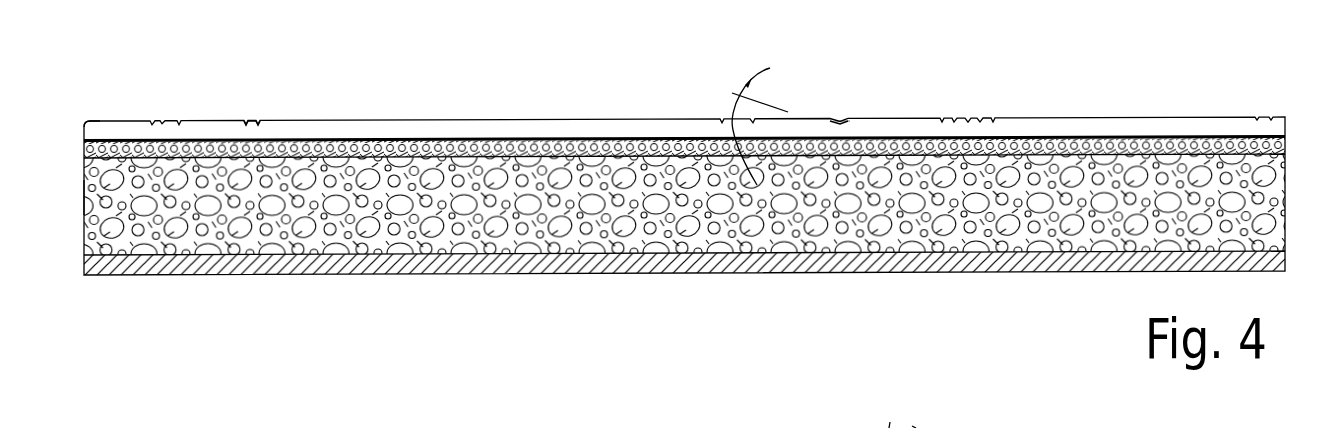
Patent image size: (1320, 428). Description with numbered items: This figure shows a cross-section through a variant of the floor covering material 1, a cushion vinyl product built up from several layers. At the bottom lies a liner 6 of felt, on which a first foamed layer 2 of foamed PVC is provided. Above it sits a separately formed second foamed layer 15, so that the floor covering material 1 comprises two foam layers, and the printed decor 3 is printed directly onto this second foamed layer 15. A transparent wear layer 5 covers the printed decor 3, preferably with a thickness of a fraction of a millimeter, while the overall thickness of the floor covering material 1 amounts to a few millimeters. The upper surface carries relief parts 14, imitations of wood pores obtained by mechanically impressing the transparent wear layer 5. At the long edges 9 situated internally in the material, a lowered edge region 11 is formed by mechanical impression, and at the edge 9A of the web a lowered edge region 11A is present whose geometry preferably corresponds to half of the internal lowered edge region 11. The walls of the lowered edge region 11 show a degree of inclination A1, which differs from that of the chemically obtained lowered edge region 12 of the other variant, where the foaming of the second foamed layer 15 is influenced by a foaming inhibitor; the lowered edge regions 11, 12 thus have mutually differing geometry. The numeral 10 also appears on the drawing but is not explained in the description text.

The floor covering material 1 is at (230, 318).
The first foamed layer 2 is at (84, 205).
The printed decor 3 is at (363, 139).
The transparent wear layer 5 is at (561, 134).
The liner 6 is at (733, 274).
The long edge 9 is at (842, 118).
The edge of the web 9A is at (84, 201).
The lower surface 10 is at (898, 408).
The lowered edge region 11 is at (855, 72).
The lowered edge region at the edge of the web 11A is at (92, 124).
The lowered edge region 12 is at (924, 424).
The relief parts 14 is at (258, 121).
The second foamed layer 15 is at (478, 140).
The degree of inclination A1 is at (770, 68).